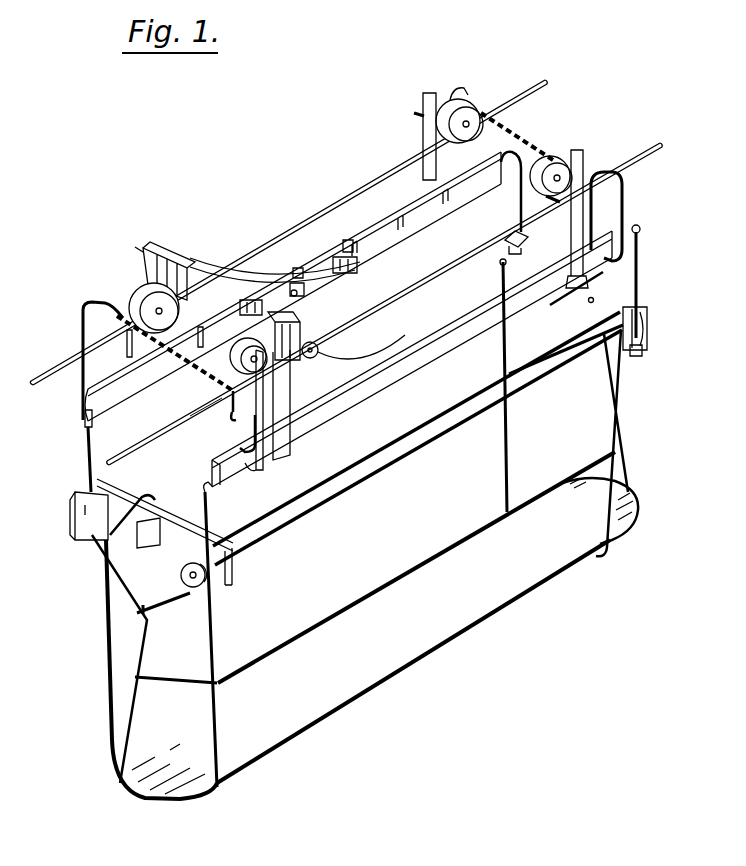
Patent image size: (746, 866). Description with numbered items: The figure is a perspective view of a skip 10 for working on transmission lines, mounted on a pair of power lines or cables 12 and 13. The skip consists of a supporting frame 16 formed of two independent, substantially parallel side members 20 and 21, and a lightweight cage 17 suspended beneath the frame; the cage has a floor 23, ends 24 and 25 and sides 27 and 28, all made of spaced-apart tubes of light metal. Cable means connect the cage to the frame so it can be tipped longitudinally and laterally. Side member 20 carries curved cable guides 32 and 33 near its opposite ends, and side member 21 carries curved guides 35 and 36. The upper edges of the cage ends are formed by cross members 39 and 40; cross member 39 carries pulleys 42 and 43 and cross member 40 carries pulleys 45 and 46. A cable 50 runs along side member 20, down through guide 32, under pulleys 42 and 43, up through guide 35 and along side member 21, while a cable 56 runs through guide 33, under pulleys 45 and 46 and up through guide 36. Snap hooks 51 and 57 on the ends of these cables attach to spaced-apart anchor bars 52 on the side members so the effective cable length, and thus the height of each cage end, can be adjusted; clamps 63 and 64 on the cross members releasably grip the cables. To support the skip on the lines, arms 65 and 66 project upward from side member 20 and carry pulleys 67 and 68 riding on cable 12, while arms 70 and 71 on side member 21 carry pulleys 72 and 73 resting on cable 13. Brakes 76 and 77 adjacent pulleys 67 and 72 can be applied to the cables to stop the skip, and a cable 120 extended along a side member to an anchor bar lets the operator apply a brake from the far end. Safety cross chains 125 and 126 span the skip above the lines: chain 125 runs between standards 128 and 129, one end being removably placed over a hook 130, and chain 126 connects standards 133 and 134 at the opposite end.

The skip 10 is at (300, 168).
The power line or cable 12 is at (517, 96).
The power line or cable 13 is at (642, 152).
The supporting frame 16 is at (438, 376).
The cage 17 is at (374, 668).
The side member 20 is at (403, 205).
The side member 21 is at (490, 328).
The floor 23 is at (490, 608).
The end 24 is at (146, 682).
The end 25 is at (580, 386).
The side 27 is at (348, 603).
The side 28 is at (378, 448).
The curved cable bearing or guide 32 is at (85, 413).
The curved cable bearing or guide 33 is at (508, 188).
The curved cable bearing or guide 35 is at (209, 492).
The curved cable bearing or guide 36 is at (641, 234).
The cross member 39 is at (175, 495).
The cross member 40 is at (642, 300).
The pulley 42 is at (75, 513).
The pulley 43 is at (196, 590).
The pulley 45 is at (510, 240).
The pulley 46 is at (634, 356).
The cable 50 is at (87, 450).
The snap hook 51 is at (306, 289).
The anchor bar 52 is at (402, 240).
The cable 56 is at (639, 280).
The snap hook 57 is at (246, 312).
The clamp 63 is at (158, 520).
The clamp 64 is at (567, 325).
The arm 65 is at (128, 350).
The arm 66 is at (425, 133).
The pulley 67 is at (130, 267).
The pulley 68 is at (505, 74).
The arm 70 is at (272, 466).
The arm 71 is at (564, 219).
The pulley 72 is at (236, 364).
The pulley 73 is at (573, 160).
The brake 76 is at (167, 240).
The brake 77 is at (300, 330).
The cable 120 is at (240, 258).
The safety cross strap or chain 125 is at (184, 380).
The safety cross strap or chain 126 is at (561, 126).
The standard 128 is at (83, 300).
The standard 129 is at (250, 424).
The hook 130 is at (207, 409).
The standard 133 is at (467, 86).
The standard 134 is at (627, 188).